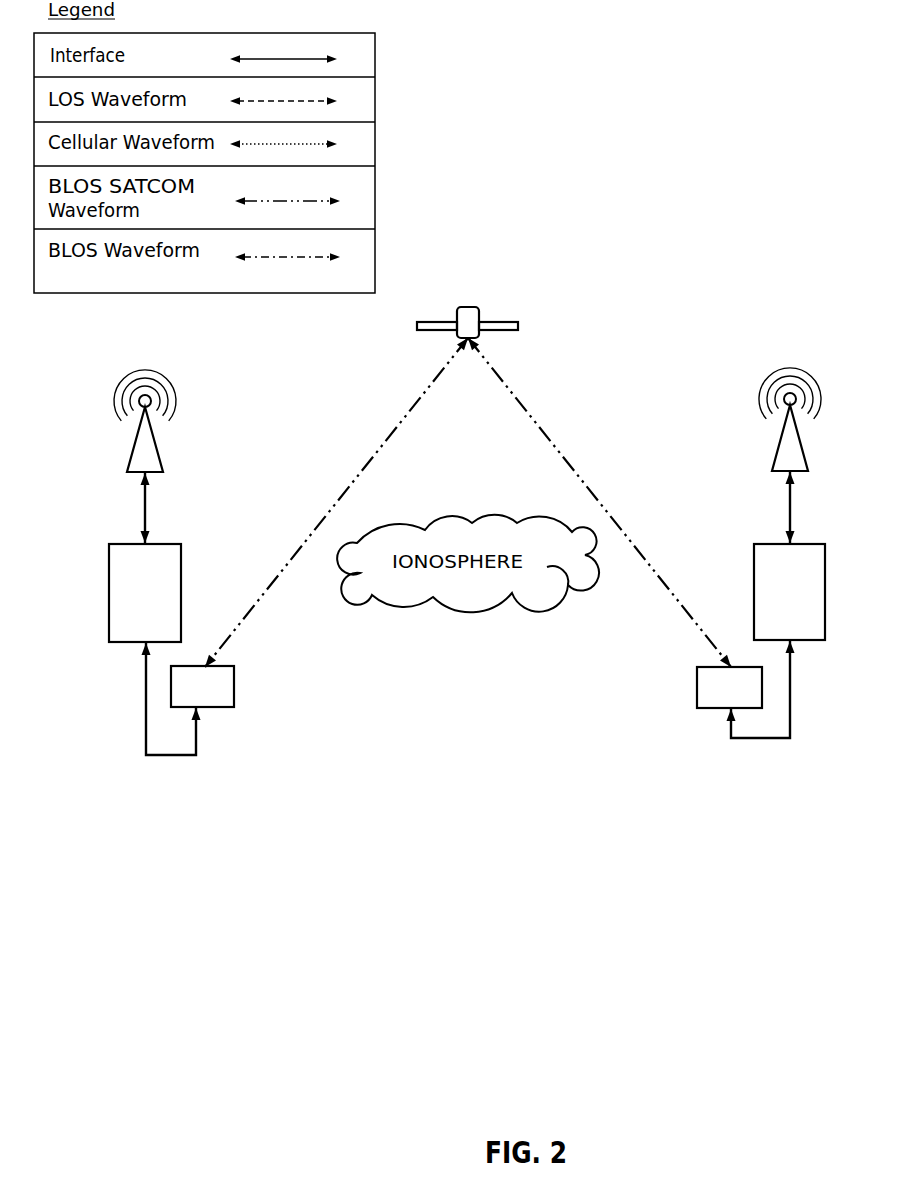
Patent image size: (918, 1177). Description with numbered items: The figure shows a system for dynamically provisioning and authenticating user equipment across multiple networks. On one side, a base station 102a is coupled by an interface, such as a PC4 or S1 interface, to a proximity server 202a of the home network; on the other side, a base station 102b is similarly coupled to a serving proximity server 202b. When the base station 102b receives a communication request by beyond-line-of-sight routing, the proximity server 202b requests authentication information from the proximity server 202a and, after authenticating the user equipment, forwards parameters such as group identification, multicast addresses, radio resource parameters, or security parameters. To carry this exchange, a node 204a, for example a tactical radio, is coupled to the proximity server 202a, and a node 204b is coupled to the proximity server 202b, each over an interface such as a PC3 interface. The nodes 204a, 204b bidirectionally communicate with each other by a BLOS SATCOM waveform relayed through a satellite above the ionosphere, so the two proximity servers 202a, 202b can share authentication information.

The base station 102a is at (142, 394).
The base station 102b is at (788, 392).
The proximity server 202a is at (181, 581).
The proximity server 202b is at (753, 556).
The node 204a is at (222, 708).
The node 204b is at (703, 709).